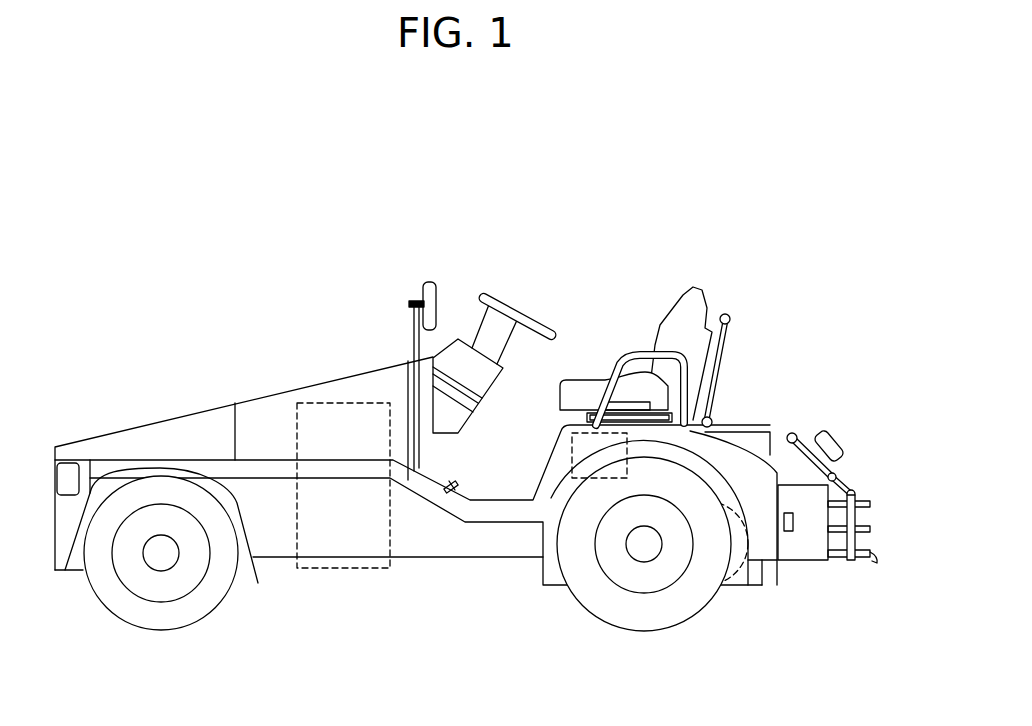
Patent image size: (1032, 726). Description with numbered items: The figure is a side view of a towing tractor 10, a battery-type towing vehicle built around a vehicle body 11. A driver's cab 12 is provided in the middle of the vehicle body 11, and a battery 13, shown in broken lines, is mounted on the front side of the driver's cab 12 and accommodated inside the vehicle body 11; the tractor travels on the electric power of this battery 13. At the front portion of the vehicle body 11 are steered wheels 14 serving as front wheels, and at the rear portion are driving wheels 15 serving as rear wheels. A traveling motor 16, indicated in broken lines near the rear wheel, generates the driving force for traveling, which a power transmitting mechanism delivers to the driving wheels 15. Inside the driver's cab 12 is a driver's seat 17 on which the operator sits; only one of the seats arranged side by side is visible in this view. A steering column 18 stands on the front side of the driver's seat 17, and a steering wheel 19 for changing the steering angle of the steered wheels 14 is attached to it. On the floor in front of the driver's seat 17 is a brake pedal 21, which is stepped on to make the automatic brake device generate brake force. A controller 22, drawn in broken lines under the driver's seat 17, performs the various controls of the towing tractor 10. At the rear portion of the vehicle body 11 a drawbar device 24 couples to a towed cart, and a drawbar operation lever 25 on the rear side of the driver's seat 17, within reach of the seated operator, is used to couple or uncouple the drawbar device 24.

The towing tractor 10 is at (680, 190).
The vehicle body 11 is at (450, 587).
The driver's cab 12 is at (578, 282).
The battery 13 is at (295, 428).
The steered wheels 14 is at (107, 607).
The driving wheels 15 is at (580, 607).
The traveling motor 16 is at (713, 590).
The driver's seat 17 is at (672, 310).
The steering column 18 is at (453, 343).
The steering wheel 19 is at (497, 296).
The brake pedal 21 is at (459, 484).
The controller 22 is at (571, 456).
The drawbar device 24 is at (858, 440).
The drawbar operation lever 25 is at (732, 317).